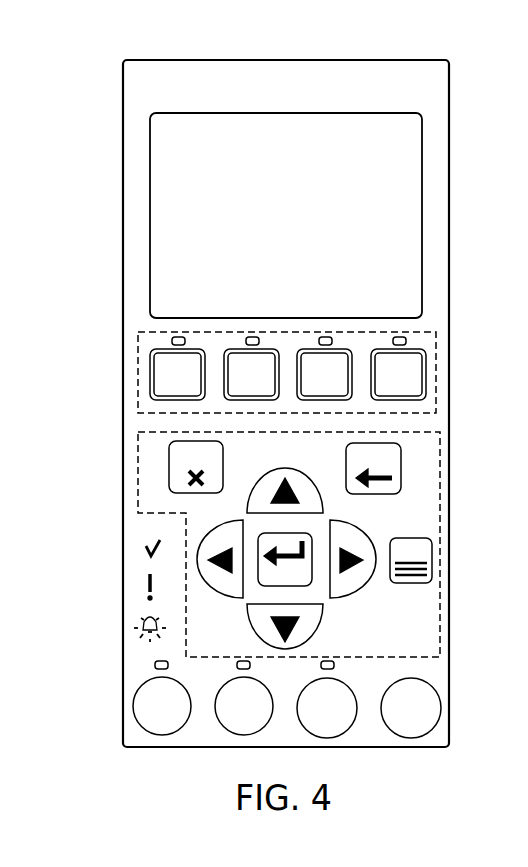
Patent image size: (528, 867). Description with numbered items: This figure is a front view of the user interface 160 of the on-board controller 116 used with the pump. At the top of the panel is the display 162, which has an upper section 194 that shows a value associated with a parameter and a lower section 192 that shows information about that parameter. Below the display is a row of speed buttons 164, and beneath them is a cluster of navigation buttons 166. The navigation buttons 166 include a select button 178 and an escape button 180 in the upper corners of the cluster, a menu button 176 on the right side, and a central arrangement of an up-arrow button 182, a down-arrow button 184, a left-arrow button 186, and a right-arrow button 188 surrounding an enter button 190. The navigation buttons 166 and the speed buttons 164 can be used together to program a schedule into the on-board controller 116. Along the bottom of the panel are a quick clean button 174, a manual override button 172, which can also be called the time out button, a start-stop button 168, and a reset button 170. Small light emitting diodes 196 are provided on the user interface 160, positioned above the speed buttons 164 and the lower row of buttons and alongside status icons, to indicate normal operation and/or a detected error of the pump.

The on-board controller 116 is at (54, 106).
The user interface 160 is at (40, 176).
The display 162 is at (410, 216).
The speed button 164 is at (430, 406).
The navigation buttons 166 is at (425, 642).
The start-stop button 168 is at (348, 728).
The reset button 170 is at (433, 735).
The manual override button 172 is at (222, 728).
The quick clean button 174 is at (162, 735).
The menu button 176 is at (405, 538).
The select button 178 is at (170, 480).
The escape button 180 is at (402, 460).
The up-arrow button 182 is at (285, 470).
The down-arrow button 184 is at (267, 626).
The left-arrow button 186 is at (236, 535).
The right-arrow button 188 is at (340, 535).
The enter button 190 is at (308, 563).
The lower section 192 is at (157, 259).
The upper section 194 is at (190, 175).
The light emitting diodes 196 is at (171, 341).